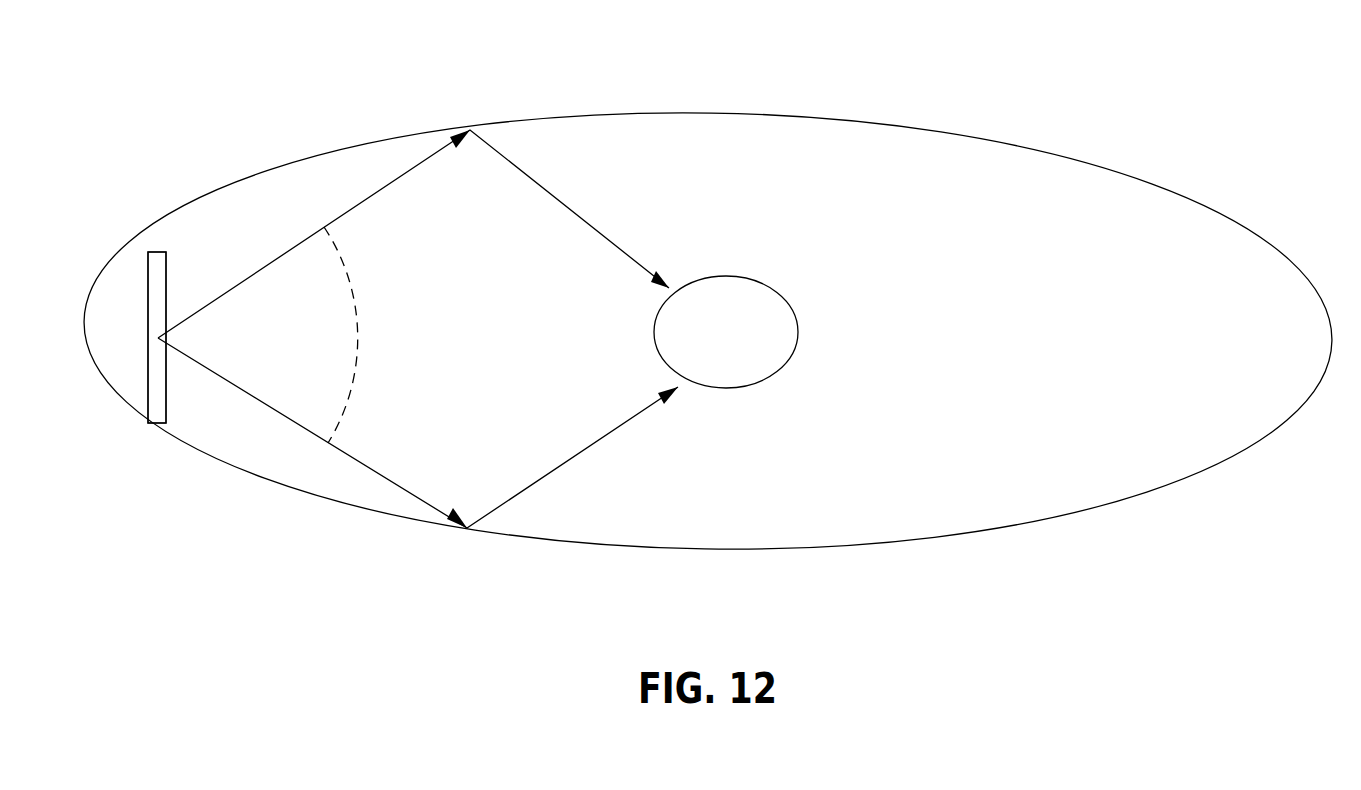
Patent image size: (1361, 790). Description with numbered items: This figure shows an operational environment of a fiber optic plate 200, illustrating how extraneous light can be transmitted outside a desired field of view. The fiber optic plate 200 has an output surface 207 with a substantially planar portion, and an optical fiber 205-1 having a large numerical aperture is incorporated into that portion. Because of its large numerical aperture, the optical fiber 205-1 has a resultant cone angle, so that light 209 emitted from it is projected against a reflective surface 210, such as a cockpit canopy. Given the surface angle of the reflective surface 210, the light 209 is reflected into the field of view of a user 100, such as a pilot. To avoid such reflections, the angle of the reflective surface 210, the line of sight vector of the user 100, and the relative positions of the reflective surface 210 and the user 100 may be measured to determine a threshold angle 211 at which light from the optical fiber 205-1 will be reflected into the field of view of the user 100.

The reflective surface 210 is at (795, 117).
The fiber optic plate 200 is at (158, 252).
The output surface 207 is at (166, 293).
The optical fiber 205-1 is at (158, 338).
The light 209 is at (355, 207).
The threshold angle 211 is at (357, 342).
The user 100 is at (762, 283).